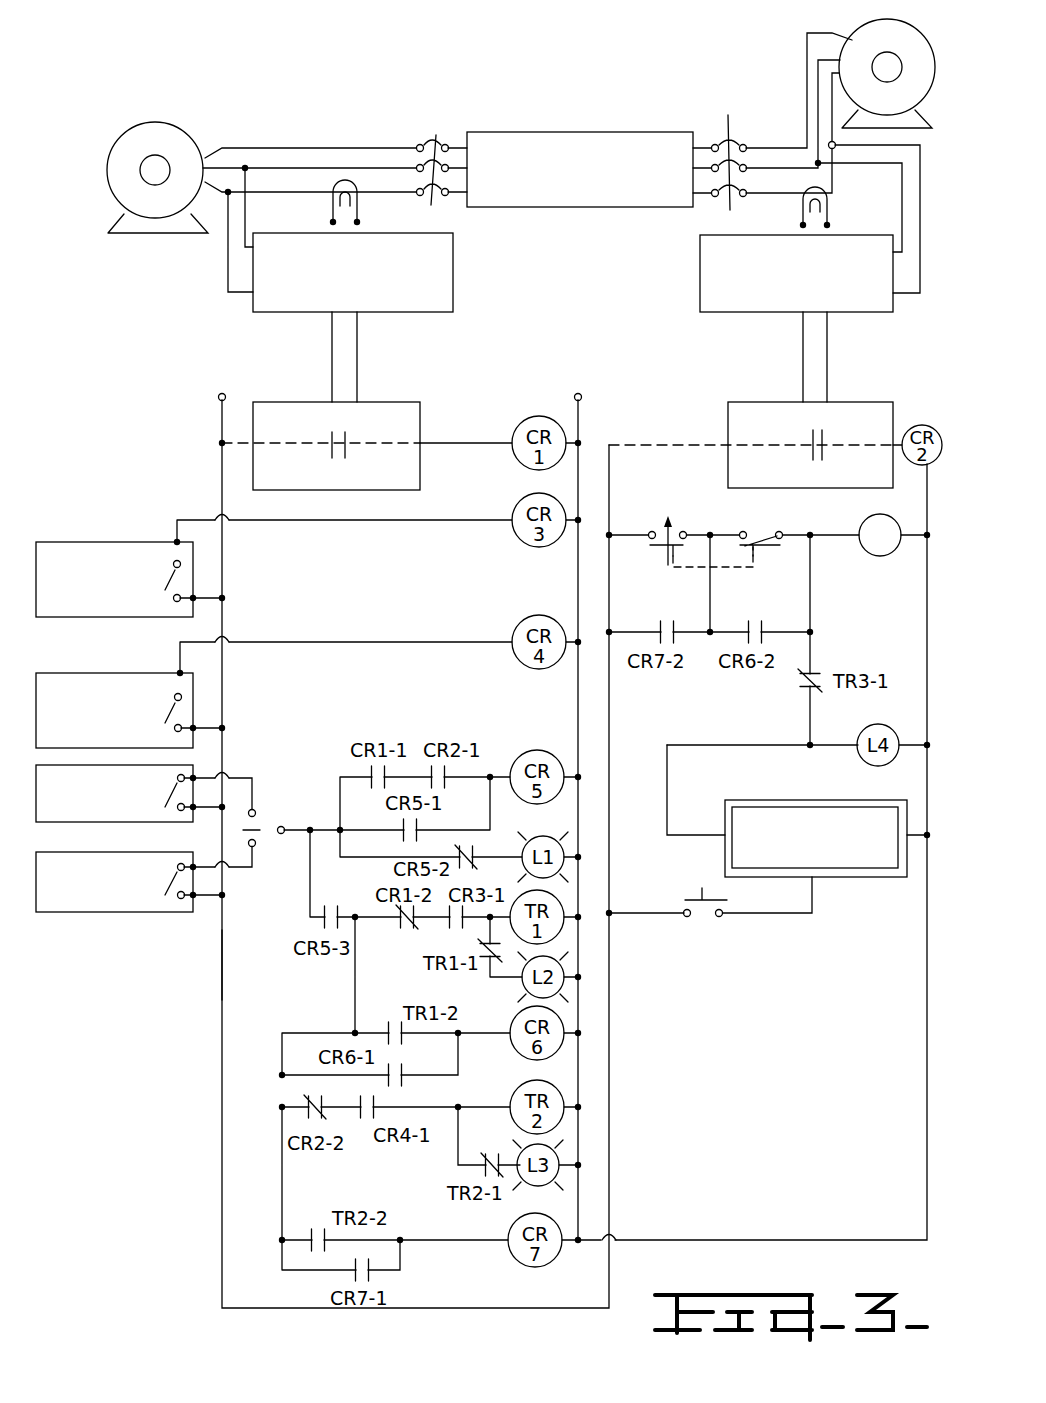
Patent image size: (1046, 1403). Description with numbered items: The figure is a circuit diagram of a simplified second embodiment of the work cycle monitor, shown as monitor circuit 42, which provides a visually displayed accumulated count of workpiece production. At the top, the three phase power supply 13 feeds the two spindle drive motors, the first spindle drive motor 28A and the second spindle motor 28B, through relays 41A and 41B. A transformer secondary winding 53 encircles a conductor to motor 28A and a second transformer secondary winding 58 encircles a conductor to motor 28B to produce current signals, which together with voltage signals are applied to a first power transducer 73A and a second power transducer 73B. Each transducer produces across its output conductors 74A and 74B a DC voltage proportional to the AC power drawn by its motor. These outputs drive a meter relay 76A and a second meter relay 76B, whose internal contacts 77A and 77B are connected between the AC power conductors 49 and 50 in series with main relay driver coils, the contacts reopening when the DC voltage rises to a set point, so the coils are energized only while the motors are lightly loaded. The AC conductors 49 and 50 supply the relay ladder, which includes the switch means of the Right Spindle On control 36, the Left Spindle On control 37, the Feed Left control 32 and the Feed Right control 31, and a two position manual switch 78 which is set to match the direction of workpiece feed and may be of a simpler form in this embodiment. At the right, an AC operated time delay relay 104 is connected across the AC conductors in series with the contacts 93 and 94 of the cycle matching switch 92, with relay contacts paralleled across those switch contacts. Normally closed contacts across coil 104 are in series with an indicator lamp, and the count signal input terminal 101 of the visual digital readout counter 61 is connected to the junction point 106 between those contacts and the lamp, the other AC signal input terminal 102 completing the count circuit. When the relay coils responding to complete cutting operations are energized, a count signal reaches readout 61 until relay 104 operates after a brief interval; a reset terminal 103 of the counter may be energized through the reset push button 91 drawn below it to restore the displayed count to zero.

The spindle drive motor 28A is at (168, 142).
The second spindle motor 28B is at (855, 42).
The transformer secondary winding 53 is at (344, 185).
The transformer secondary winding 58 is at (810, 185).
The relay 41A is at (434, 137).
The relay 41B is at (730, 137).
The three phase power supply 13 is at (603, 207).
The first power transducer 73A is at (453, 284).
The second power transducer 73B is at (700, 284).
The output conductors 74A is at (338, 365).
The output conductors 74B is at (812, 368).
The meter relay 76A is at (390, 402).
The second meter relay 76B is at (850, 402).
The internal contacts 77A is at (347, 447).
The internal contacts 77B is at (823, 447).
The AC power conductor 50 is at (219, 397).
The AC power conductor 49 is at (582, 397).
The Right Spindle On control 36 is at (127, 542).
The Left Spindle On control 37 is at (130, 673).
The Feed Left control 32 is at (187, 765).
The Feed Right control 31 is at (82, 912).
The two position manual switch 78 is at (262, 823).
The monitor circuit 42 is at (195, 966).
The contacts 93 is at (652, 530).
The contacts 94 is at (780, 532).
The cycle matching switch 92 is at (728, 570).
The time delay relay 104 is at (874, 556).
The junction point 106 is at (810, 750).
The AC signal input terminal 101 is at (723, 835).
The AC signal input terminal 102 is at (913, 830).
The visual digital readout counter 61 is at (880, 873).
The reset push button 91 is at (690, 898).
The reset terminal 103 is at (813, 891).